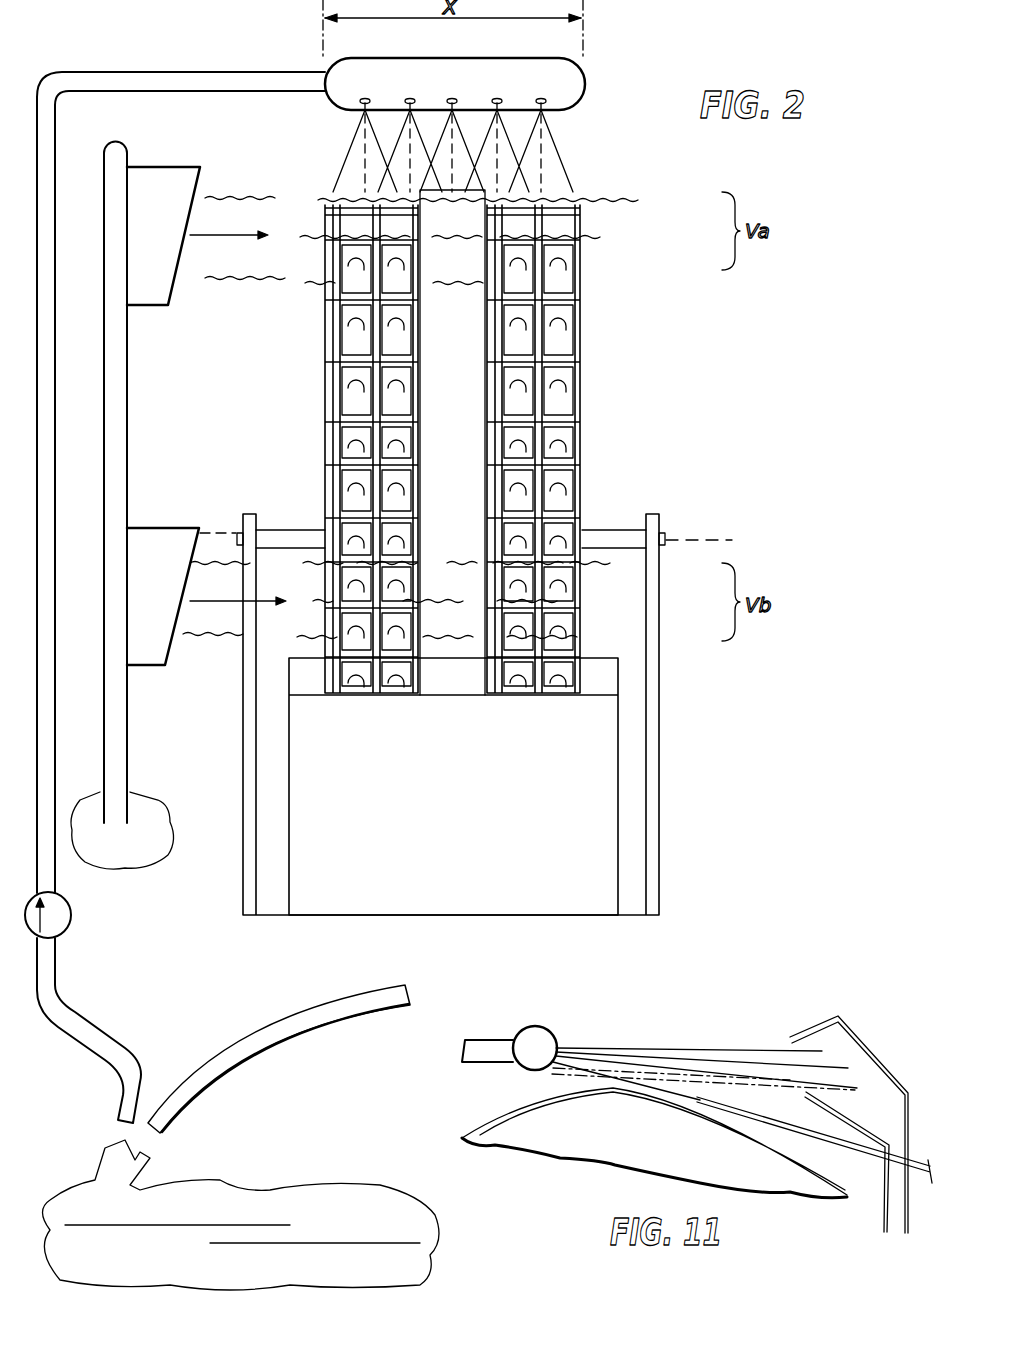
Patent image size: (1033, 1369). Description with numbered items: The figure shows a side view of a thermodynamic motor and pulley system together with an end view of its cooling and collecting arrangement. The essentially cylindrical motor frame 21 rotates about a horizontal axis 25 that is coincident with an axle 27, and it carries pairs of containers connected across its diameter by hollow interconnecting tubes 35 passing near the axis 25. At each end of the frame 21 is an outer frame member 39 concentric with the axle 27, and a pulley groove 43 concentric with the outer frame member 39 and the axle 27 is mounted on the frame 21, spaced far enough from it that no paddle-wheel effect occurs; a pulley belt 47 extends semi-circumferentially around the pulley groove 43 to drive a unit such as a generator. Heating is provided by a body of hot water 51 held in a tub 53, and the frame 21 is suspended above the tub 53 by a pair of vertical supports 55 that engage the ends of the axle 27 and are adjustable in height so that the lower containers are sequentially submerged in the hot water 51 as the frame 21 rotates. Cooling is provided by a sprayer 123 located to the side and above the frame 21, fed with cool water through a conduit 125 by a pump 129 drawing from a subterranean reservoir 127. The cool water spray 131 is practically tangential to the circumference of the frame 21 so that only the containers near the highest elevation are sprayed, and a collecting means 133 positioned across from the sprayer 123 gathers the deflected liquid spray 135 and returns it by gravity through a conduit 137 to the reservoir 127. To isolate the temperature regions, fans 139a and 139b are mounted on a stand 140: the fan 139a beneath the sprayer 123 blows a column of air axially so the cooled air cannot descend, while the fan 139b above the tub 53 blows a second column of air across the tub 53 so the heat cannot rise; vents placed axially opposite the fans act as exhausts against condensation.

In FIG. 2, the motor frame 21 is at (460, 442).
In FIG. 11, the motor frame 21 is at (806, 1158).
In FIG. 2, the horizontal axis 25 is at (722, 541).
In FIG. 2, the axle 27 is at (300, 530).
In FIG. 2, the hollow interconnecting tube 35 is at (555, 262).
In FIG. 2, the outer frame member 39 is at (325, 400).
In FIG. 2, the pulley groove 43 is at (463, 329).
In FIG. 11, the pulley belt 47 is at (830, 1155).
In FIG. 2, the body of hot water 51 is at (349, 822).
In FIG. 2, the tub 53 is at (289, 760).
In FIG. 2, the vertical support 55 is at (243, 686).
In FIG. 2, the sprayer 123 is at (584, 86).
In FIG. 11, the sprayer 123 is at (557, 1037).
In FIG. 2, the conduit 125 is at (55, 455).
In FIG. 2, the subterranean reservoir 127 is at (308, 1195).
In FIG. 2, the pump 129 is at (70, 926).
In FIG. 2, the cool water spray 131 is at (575, 171).
In FIG. 11, the cool water spray 131 is at (630, 1057).
In FIG. 11, the collecting means 133 is at (860, 1050).
In FIG. 11, the deflected liquid spray 135 is at (733, 1070).
In FIG. 2, the conduit 137 is at (325, 1005).
In FIG. 11, the conduit 137 is at (881, 1222).
In FIG. 2, the fan 139a is at (175, 168).
In FIG. 2, the fan 139b is at (165, 530).
In FIG. 2, the stand 140 is at (127, 455).